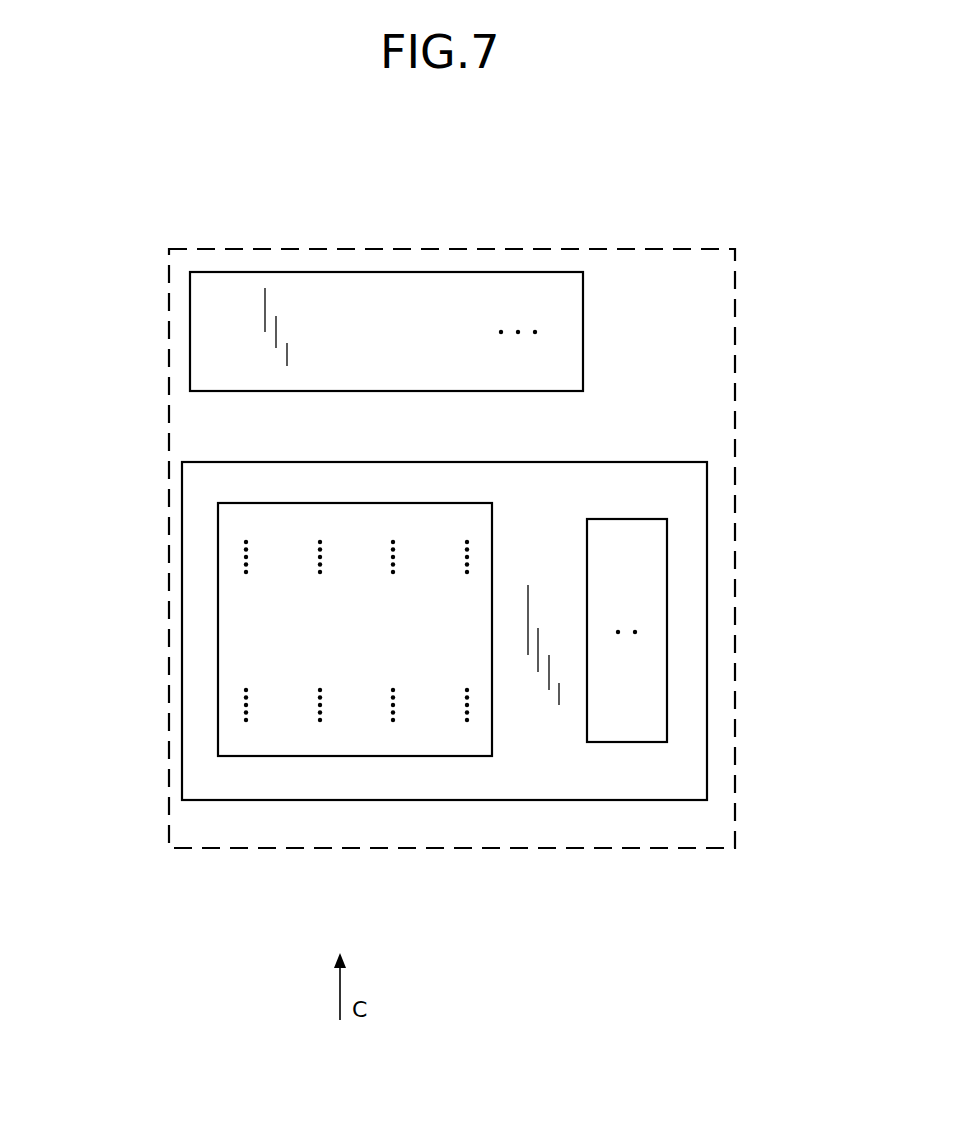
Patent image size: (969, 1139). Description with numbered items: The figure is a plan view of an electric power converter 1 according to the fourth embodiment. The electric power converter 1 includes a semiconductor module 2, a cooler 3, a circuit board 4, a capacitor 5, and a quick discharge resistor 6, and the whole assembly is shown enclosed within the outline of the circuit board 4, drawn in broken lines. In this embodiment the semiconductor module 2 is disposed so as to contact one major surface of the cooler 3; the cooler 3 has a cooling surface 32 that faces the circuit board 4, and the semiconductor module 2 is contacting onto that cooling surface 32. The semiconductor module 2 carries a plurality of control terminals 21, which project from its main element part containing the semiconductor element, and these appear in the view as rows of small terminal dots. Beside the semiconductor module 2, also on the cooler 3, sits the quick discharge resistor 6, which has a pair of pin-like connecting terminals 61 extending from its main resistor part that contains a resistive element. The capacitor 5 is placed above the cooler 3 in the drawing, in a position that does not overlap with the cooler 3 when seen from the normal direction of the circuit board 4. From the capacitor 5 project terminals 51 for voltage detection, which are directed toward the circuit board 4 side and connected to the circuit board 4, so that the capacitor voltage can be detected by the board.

The electric power converter 1 is at (618, 206).
The semiconductor module 2 is at (280, 735).
The control terminals 21 is at (244, 571).
The cooler 3 is at (596, 778).
The cooling surface 32 is at (540, 762).
The circuit board 4 is at (668, 278).
The capacitor 5 is at (420, 310).
The voltage detection terminals 51 is at (518, 322).
The quick discharge resistor 6 is at (638, 568).
The connecting terminals 61 is at (635, 634).